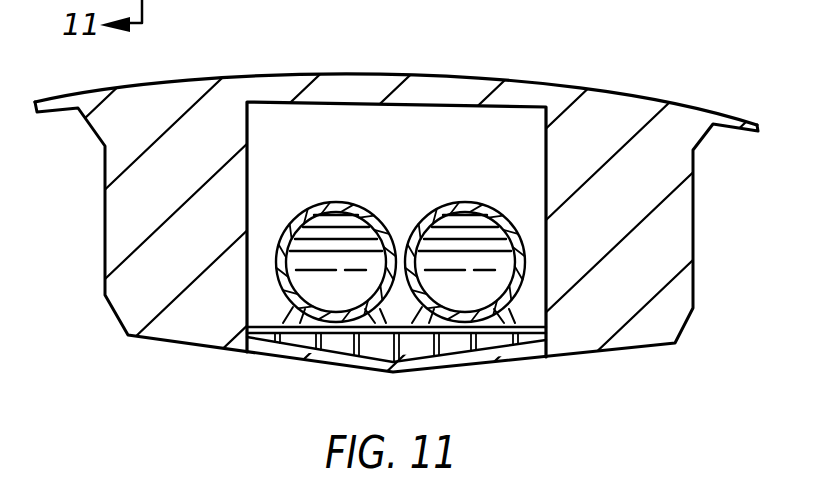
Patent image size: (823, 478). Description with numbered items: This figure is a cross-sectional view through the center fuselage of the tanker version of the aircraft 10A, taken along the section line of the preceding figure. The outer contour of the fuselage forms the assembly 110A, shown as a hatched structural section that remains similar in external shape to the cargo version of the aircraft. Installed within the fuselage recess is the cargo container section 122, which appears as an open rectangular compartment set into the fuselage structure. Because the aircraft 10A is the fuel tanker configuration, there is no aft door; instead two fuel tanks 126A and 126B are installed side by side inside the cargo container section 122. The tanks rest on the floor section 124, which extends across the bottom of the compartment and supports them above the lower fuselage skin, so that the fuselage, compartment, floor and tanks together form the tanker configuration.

The tanker version aircraft 10A is at (645, 61).
The assembly 110A is at (250, 70).
The cargo container section 122 is at (412, 147).
The floor section 124 is at (531, 327).
The fuel tank 126A is at (304, 212).
The fuel tank 126B is at (425, 212).